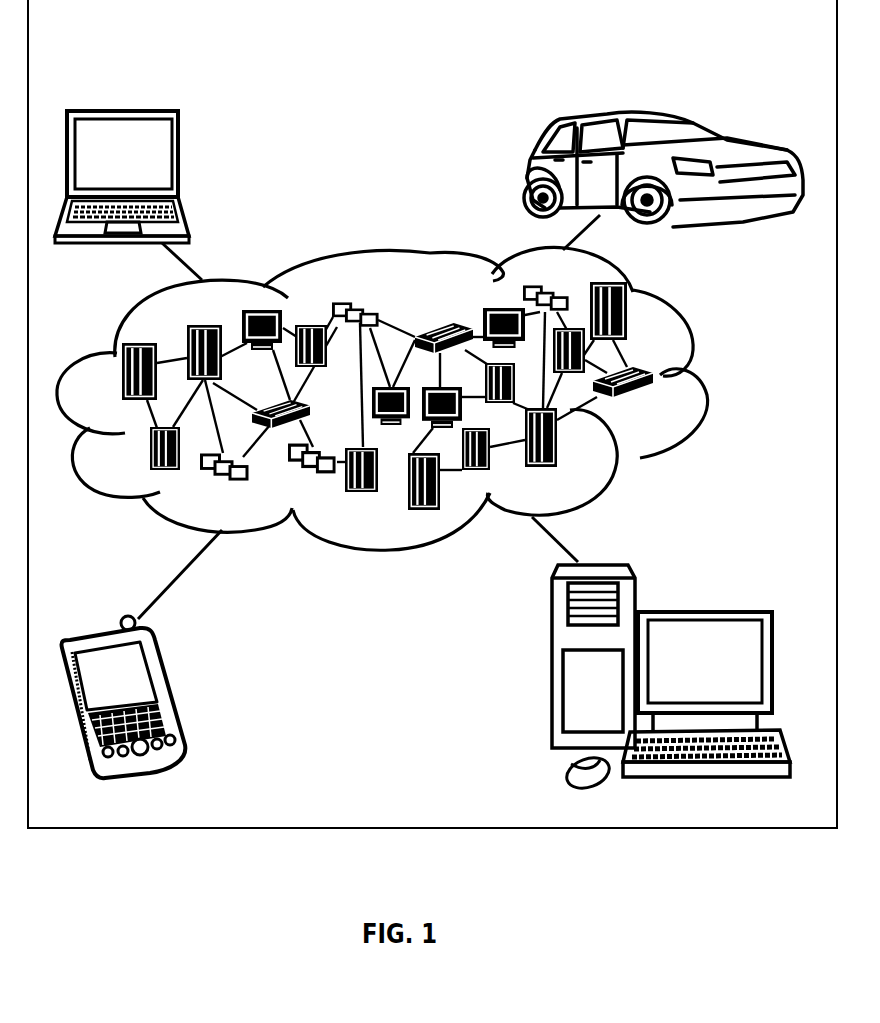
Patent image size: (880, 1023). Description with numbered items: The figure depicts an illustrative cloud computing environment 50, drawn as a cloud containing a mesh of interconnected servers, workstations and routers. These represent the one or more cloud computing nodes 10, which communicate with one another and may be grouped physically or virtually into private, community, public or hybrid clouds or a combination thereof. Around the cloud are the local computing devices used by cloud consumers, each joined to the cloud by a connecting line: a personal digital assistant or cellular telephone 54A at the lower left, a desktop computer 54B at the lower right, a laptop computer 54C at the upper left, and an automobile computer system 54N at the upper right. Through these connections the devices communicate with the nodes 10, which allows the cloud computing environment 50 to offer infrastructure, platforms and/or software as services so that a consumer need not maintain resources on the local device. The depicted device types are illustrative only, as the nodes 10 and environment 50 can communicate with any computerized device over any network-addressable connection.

The cloud computing nodes 10 is at (430, 450).
The cloud computing environment 50 is at (707, 377).
The personal digital assistant (PDA) or cellular telephone 54A is at (170, 684).
The desktop computer 54B is at (702, 611).
The laptop computer 54C is at (178, 161).
The automobile computer system 54N is at (527, 172).